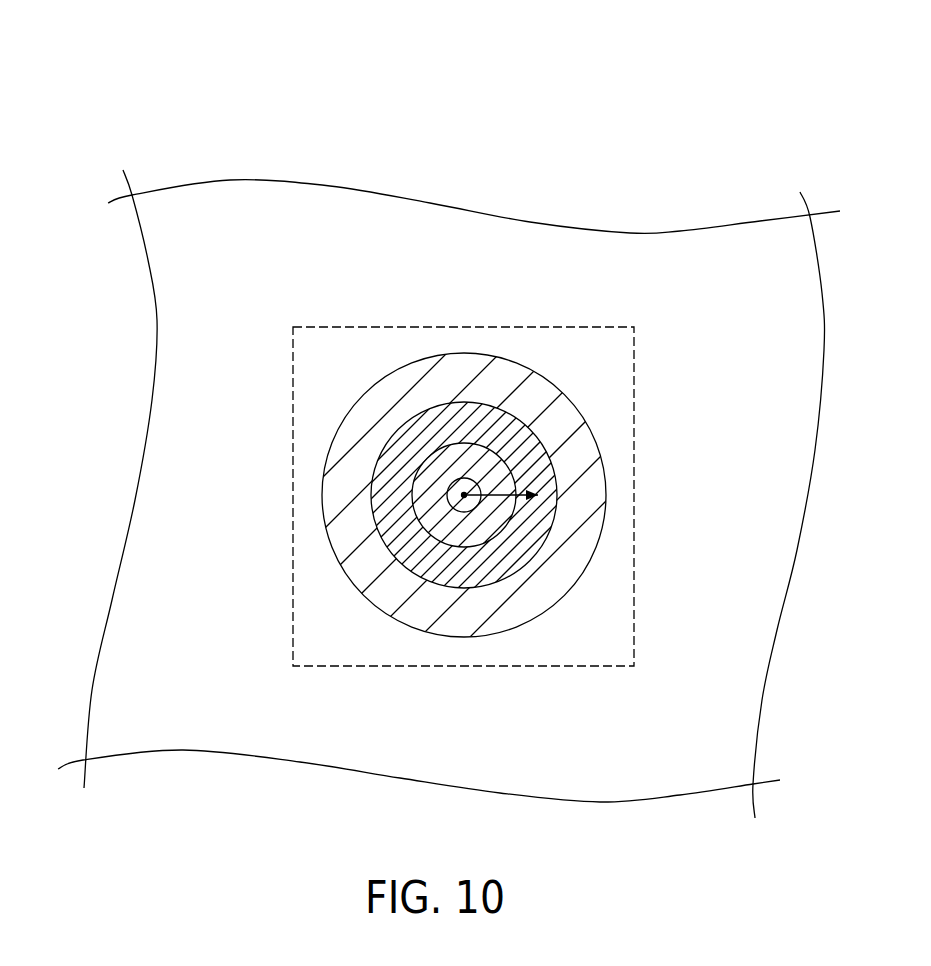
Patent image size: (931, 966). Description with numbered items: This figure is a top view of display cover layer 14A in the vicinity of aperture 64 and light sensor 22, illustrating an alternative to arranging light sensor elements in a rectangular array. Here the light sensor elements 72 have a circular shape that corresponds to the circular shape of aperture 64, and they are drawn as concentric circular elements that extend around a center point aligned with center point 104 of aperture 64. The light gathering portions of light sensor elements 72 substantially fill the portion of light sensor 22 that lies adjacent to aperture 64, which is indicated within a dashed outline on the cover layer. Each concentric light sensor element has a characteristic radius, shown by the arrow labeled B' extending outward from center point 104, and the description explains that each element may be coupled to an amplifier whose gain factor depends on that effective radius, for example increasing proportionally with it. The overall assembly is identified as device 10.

The magnetic sensor device 10 is at (247, 72).
The display cover layer 14A is at (680, 247).
The light sensor 22 is at (577, 343).
The aperture 64 is at (415, 360).
The light sensor elements 72 is at (367, 582).
The center point 104 is at (463, 478).
The magnetic field direction B' is at (542, 443).